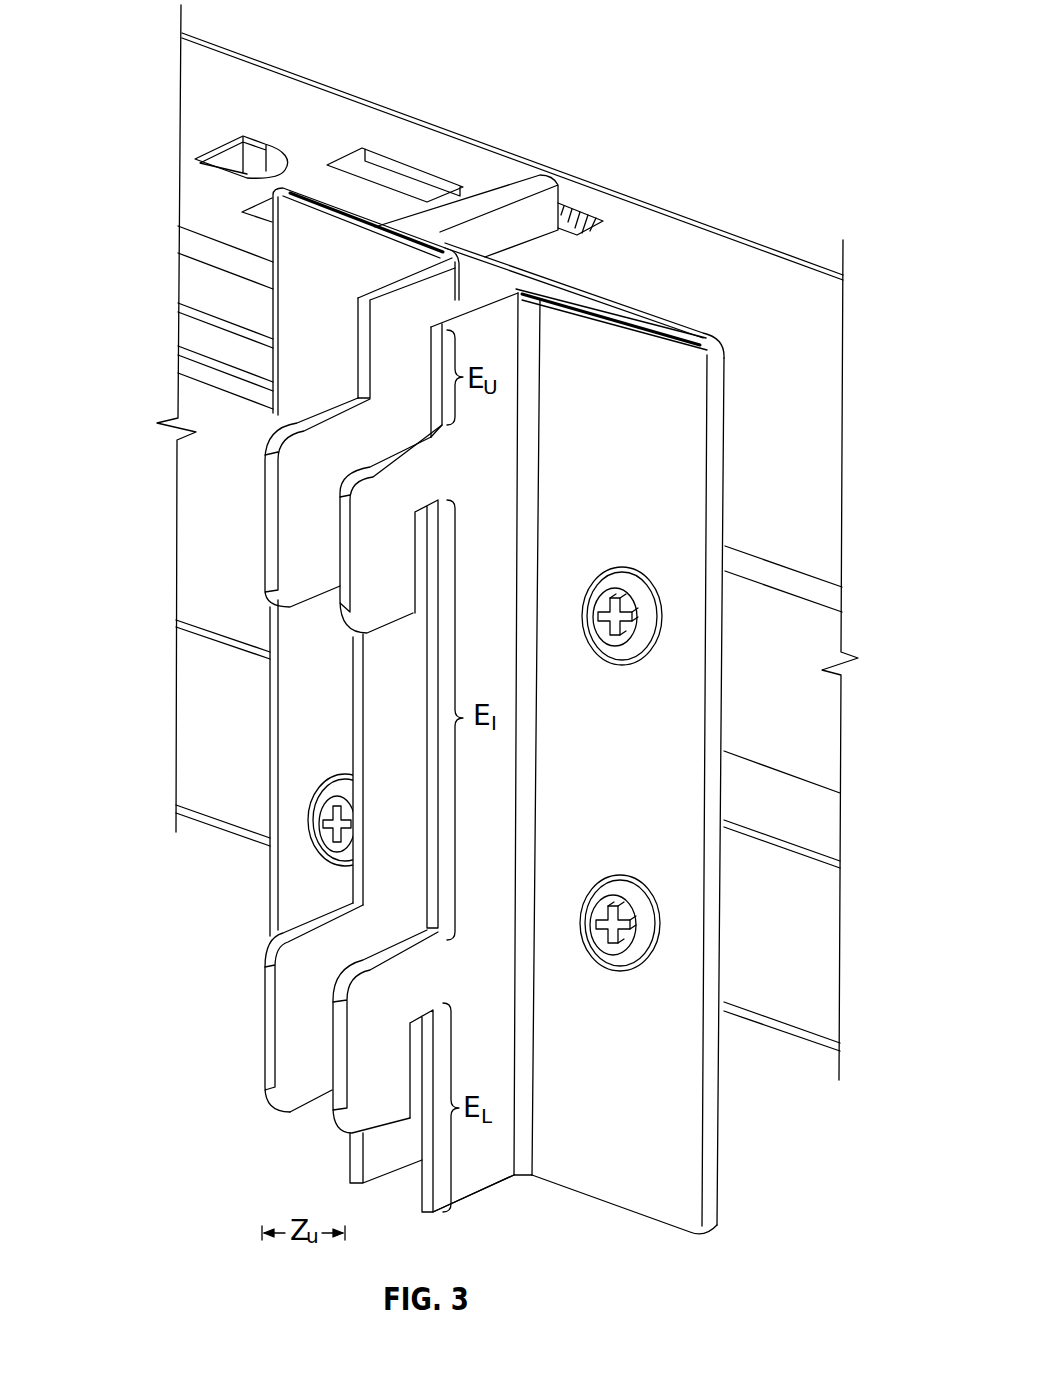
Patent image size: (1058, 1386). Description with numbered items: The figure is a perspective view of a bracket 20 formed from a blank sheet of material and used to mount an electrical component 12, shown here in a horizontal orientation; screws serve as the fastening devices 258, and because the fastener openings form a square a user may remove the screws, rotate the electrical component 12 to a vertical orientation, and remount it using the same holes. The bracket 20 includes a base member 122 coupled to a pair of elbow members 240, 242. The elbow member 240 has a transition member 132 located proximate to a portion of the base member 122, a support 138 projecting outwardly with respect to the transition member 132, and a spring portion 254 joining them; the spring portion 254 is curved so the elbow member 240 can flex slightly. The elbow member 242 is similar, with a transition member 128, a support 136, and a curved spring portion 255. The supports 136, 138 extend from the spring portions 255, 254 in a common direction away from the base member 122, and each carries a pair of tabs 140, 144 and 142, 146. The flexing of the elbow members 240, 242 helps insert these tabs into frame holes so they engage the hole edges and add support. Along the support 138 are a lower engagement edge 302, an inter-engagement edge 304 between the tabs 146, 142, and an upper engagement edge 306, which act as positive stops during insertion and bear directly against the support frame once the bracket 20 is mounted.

The electrical component 12 is at (710, 247).
The bracket 20 is at (136, 72).
The base member 122 is at (708, 326).
The transition member 128 is at (337, 267).
The transition member 132 is at (647, 399).
The support 136 is at (401, 306).
The support 138 is at (497, 330).
The tab 140 is at (262, 503).
The tab 142 is at (330, 567).
The tab 144 is at (263, 953).
The tab 146 is at (325, 1053).
The elbow member 240 is at (549, 1198).
The elbow member 242 is at (247, 1110).
The spring portion 254 is at (525, 1177).
The spring portion 255 is at (445, 258).
The fastening devices 258 is at (646, 627).
The lower engagement edge 302 is at (353, 1157).
The inter-engagement edge 304 is at (363, 702).
The upper engagement edge 306 is at (363, 345).